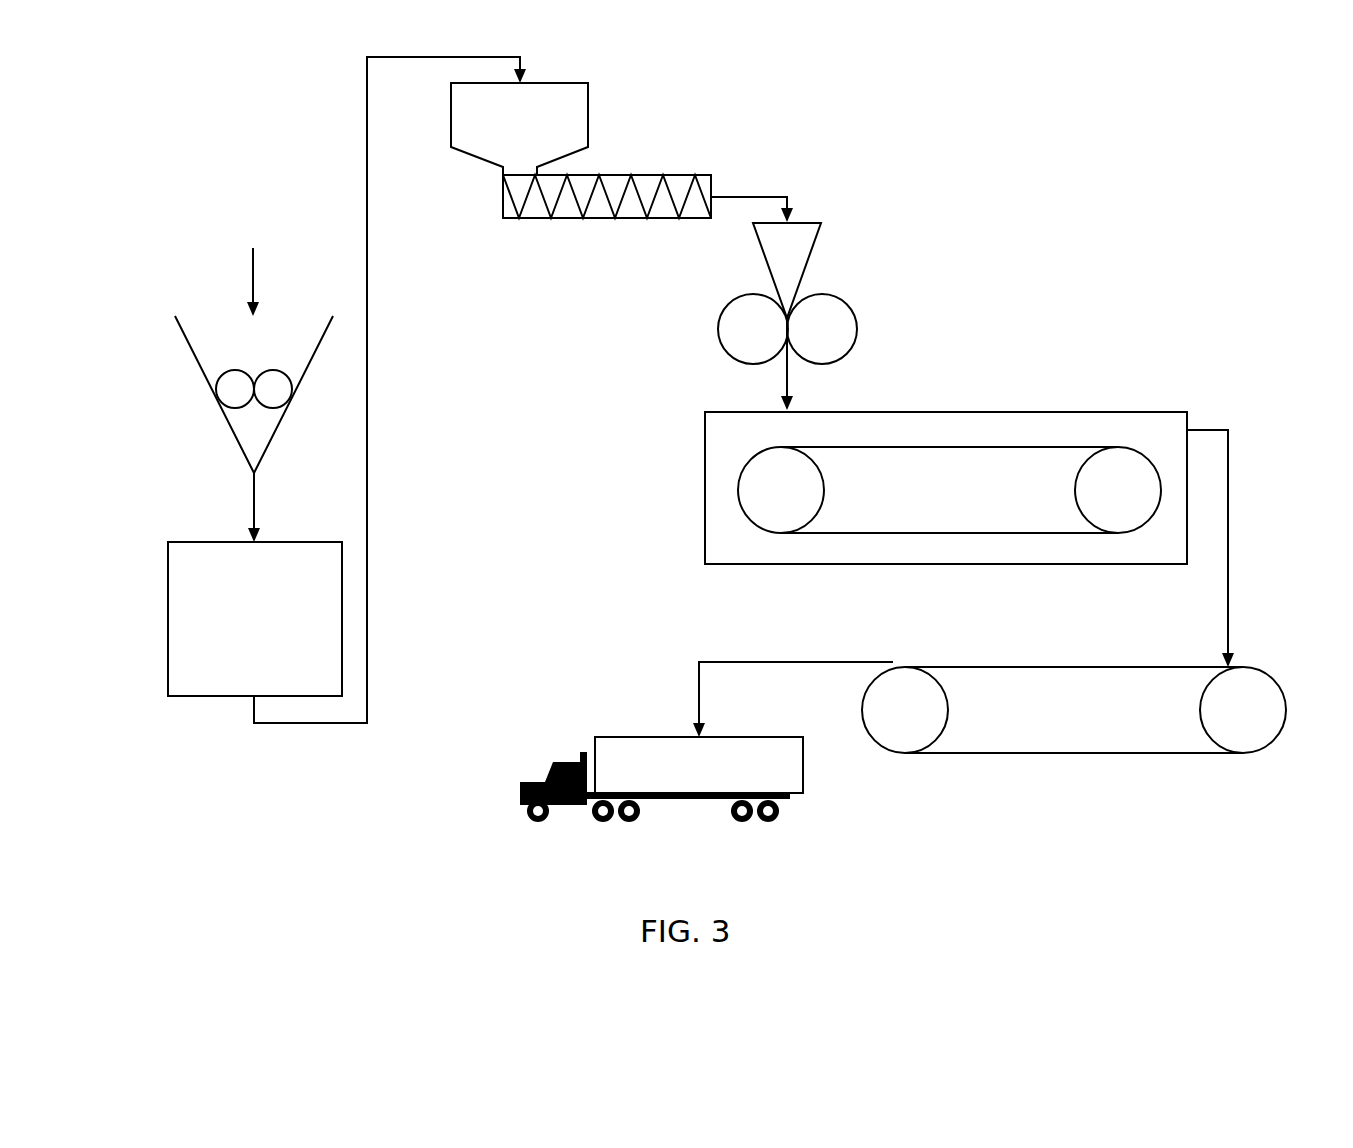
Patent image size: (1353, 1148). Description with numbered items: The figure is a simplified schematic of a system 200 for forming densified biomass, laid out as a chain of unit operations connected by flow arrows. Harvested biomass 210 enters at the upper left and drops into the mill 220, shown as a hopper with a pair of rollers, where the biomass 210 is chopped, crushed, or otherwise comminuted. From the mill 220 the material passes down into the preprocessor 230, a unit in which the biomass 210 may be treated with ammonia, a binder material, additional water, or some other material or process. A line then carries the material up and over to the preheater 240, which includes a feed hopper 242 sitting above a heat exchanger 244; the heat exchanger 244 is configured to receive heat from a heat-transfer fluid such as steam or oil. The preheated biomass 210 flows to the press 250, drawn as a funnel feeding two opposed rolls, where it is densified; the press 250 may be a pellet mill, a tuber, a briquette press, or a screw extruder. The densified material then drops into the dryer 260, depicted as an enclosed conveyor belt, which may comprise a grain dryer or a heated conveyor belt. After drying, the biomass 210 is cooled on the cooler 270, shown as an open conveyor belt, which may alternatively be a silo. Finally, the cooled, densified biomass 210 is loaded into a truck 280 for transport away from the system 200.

The system 200 is at (202, 125).
The harvested biomass 210 is at (253, 279).
The mill 220 is at (215, 397).
The preprocessor 230 is at (272, 632).
The preheater 240 is at (616, 133).
The feed hopper 242 is at (536, 134).
The heat exchanger 244 is at (608, 218).
The press 250 is at (802, 283).
The dryer 260 is at (980, 410).
The cooler 270 is at (1028, 665).
The truck 280 is at (615, 737).